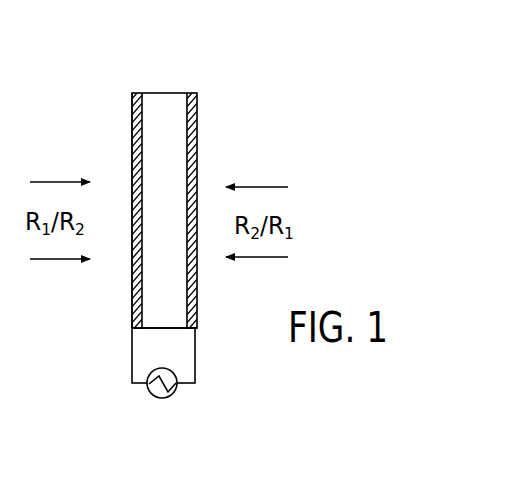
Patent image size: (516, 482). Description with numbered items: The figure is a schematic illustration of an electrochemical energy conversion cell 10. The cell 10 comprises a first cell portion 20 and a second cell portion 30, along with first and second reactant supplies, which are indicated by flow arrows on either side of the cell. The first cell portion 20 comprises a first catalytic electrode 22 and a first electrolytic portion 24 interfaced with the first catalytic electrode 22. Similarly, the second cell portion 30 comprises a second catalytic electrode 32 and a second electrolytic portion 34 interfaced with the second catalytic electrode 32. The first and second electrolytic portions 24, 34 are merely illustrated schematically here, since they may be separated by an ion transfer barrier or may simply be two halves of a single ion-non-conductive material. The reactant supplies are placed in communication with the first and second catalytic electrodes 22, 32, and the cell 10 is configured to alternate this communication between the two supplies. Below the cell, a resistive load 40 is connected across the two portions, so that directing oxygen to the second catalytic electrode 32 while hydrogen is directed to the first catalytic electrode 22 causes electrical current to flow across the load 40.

The electrochemical energy conversion cell 10 is at (373, 148).
The first cell portion 20 is at (200, 83).
The first catalytic electrode 22 is at (197, 145).
The first electrolytic portion 24 is at (185, 310).
The second cell portion 30 is at (130, 85).
The second catalytic electrode 32 is at (132, 145).
The second electrolytic portion 34 is at (142, 311).
The resistive load 40 is at (177, 377).